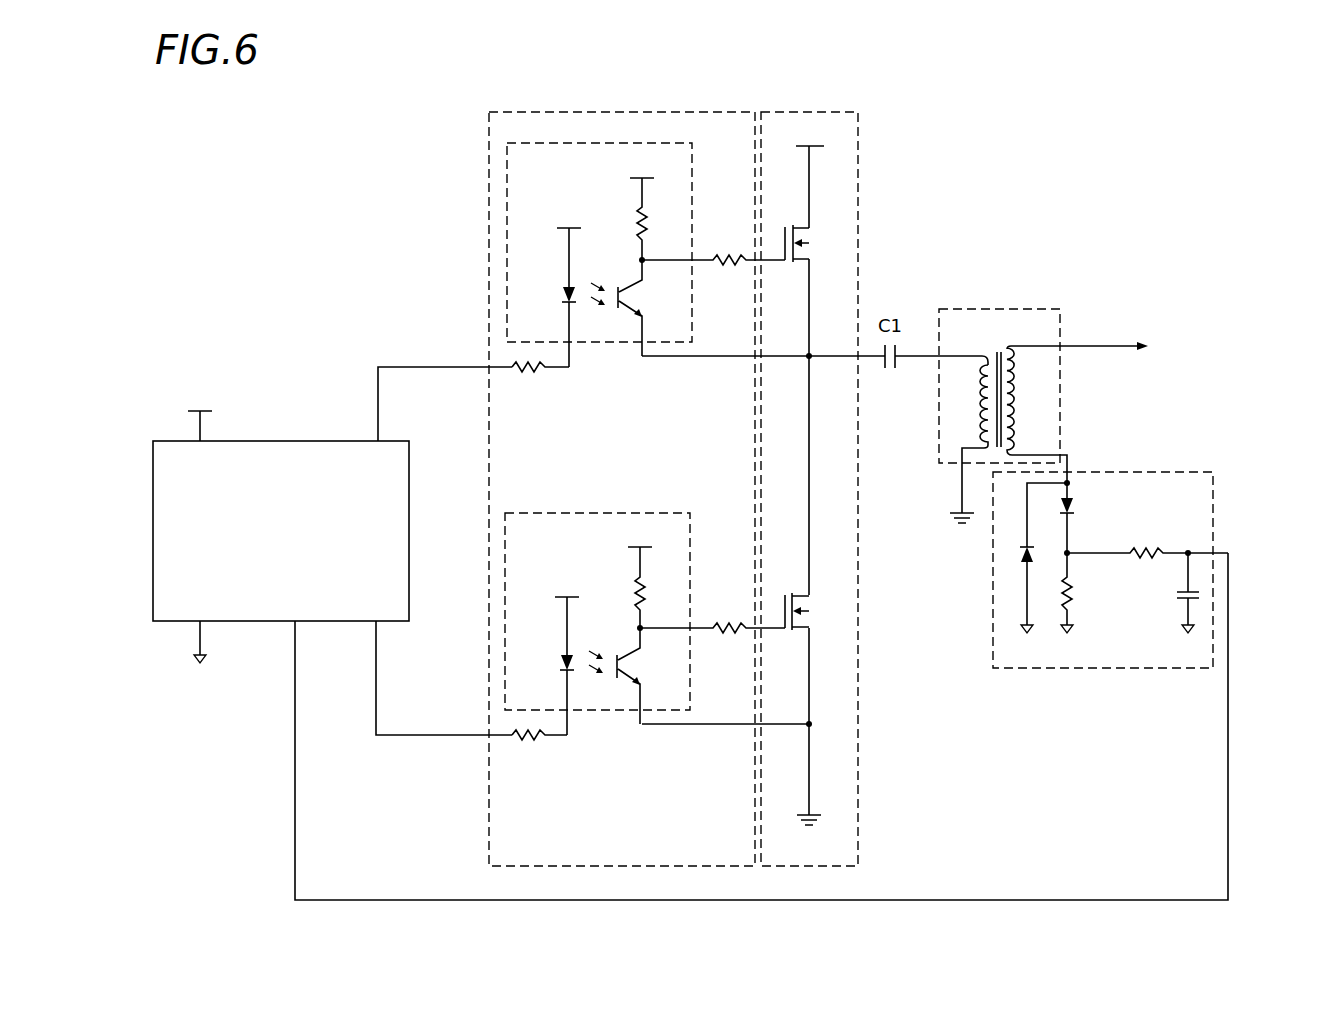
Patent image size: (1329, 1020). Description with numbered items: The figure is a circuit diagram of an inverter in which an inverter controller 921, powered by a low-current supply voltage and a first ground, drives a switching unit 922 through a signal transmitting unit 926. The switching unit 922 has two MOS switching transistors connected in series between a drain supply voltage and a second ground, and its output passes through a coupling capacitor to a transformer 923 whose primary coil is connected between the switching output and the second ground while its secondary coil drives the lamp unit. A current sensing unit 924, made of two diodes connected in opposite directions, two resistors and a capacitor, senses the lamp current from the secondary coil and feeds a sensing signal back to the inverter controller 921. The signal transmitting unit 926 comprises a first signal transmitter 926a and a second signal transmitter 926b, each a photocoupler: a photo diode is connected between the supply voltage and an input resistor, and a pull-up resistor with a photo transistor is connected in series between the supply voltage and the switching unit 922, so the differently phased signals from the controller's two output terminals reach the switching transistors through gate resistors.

The inverter controller 921 is at (283, 441).
The switching unit 922 is at (812, 112).
The transformer 923 is at (1000, 309).
The current sensing unit 924 is at (1160, 472).
The signal transmitting unit 926 is at (623, 112).
The first signal transmitter 926a is at (668, 143).
The second signal transmitter 926b is at (665, 513).